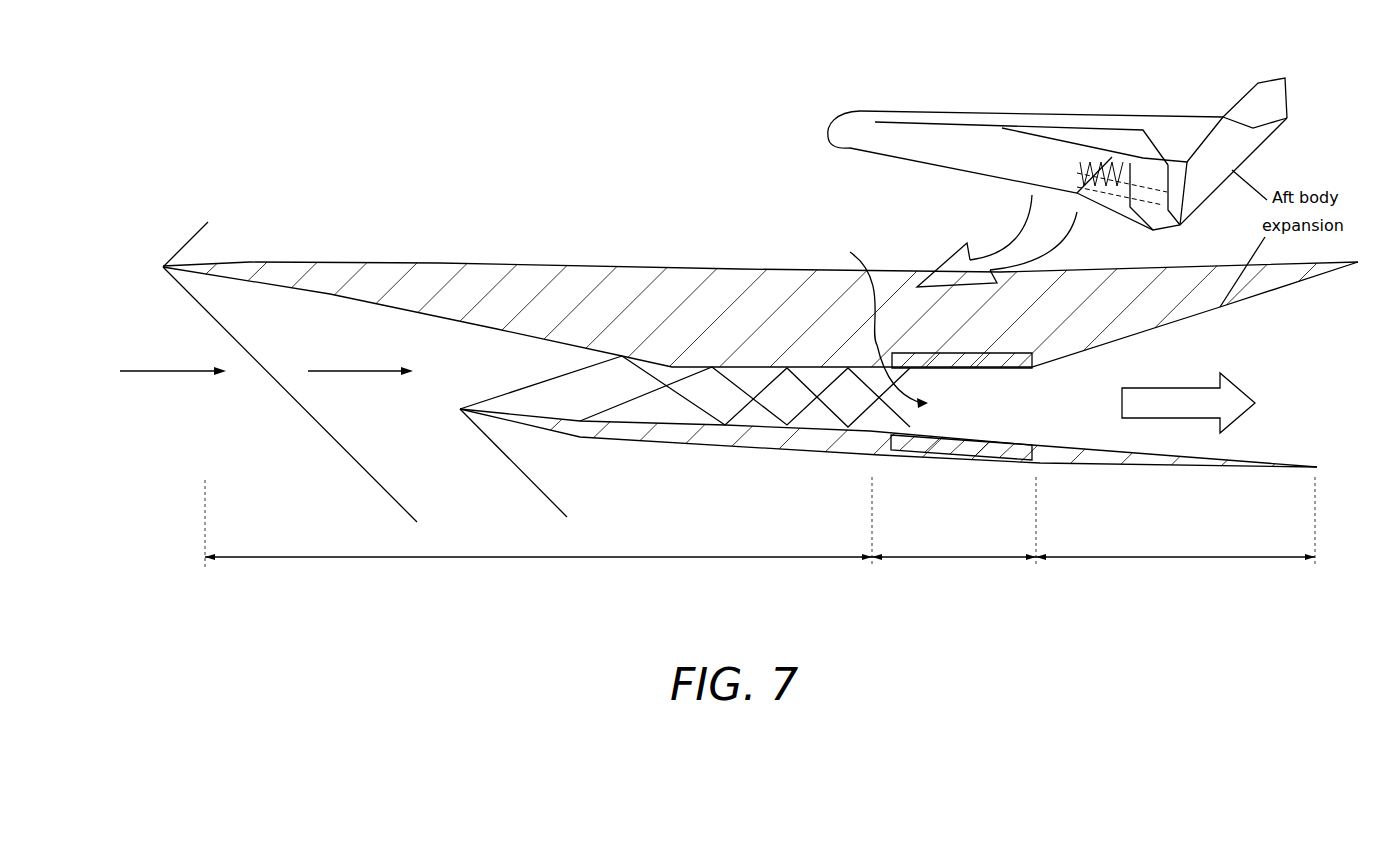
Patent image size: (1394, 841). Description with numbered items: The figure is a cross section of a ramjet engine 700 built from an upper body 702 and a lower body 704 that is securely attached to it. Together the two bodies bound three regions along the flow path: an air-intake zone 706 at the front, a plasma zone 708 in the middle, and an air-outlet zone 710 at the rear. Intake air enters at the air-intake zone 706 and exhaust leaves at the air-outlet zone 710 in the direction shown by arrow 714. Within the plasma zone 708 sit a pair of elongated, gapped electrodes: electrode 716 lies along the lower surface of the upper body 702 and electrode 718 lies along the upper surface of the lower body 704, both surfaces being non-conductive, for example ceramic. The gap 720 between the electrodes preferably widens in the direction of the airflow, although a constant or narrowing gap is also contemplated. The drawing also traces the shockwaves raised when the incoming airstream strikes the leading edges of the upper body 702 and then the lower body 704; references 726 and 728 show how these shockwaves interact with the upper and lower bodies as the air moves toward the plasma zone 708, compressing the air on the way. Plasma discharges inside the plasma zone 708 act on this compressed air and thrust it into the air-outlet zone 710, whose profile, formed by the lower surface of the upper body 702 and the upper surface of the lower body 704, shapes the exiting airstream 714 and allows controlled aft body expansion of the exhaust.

The ramjet engine 700 is at (404, 191).
The upper body 702 is at (533, 278).
The lower body 704 is at (813, 442).
The air-intake zone 706 is at (538, 592).
The plasma zone 708 is at (955, 593).
The air-outlet zone 710 is at (1177, 593).
The exhaust airflow arrow 714 is at (1157, 420).
The electrode 716 is at (1013, 362).
The electrode 718 is at (963, 450).
The gap 720 is at (870, 317).
The shockwave interactions 726 is at (785, 368).
The shockwave interactions 728 is at (787, 425).